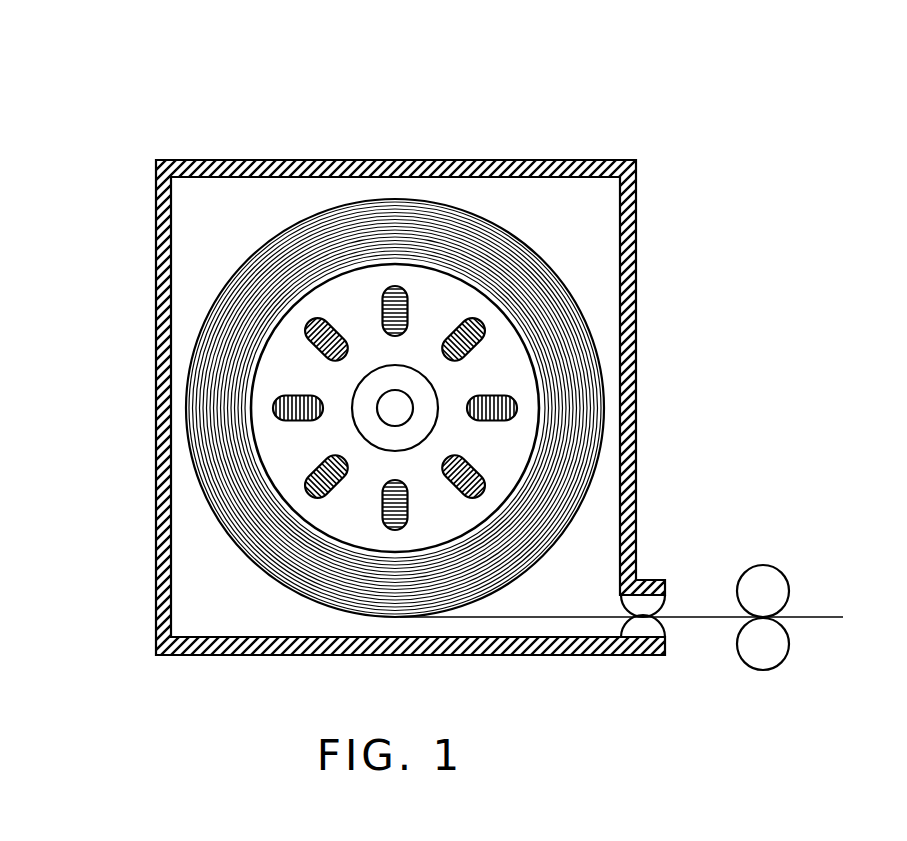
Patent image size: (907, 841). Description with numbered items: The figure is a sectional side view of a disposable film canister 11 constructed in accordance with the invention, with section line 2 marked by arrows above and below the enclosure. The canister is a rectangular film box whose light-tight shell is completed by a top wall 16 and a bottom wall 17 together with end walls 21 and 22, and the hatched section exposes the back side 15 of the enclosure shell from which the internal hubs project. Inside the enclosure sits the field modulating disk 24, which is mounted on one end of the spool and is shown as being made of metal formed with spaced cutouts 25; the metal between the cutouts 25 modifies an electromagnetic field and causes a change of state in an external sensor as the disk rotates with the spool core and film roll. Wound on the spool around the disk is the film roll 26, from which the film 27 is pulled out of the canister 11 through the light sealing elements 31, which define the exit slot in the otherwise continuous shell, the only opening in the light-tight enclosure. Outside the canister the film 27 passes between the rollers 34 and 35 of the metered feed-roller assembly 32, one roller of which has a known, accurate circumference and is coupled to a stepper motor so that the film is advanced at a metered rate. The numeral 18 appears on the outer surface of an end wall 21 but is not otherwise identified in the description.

The film canister 11 is at (514, 130).
The section line of FIG. 2 is at (351, 144).
The back side 15 is at (565, 218).
The top wall 16 is at (578, 170).
The bottom wall 17 is at (527, 642).
The right side wall of housing 18 is at (637, 290).
The end wall 21 is at (628, 357).
The end wall 22 is at (156, 401).
The field modulating disk 24 is at (374, 324).
The cutouts 25 is at (318, 338).
The film roll 26 is at (263, 265).
The film 27 is at (588, 613).
The light sealing elements 31 is at (648, 602).
The metered feed-roller assembly 32 is at (785, 591).
The roller 34 is at (770, 591).
The roller 35 is at (768, 655).